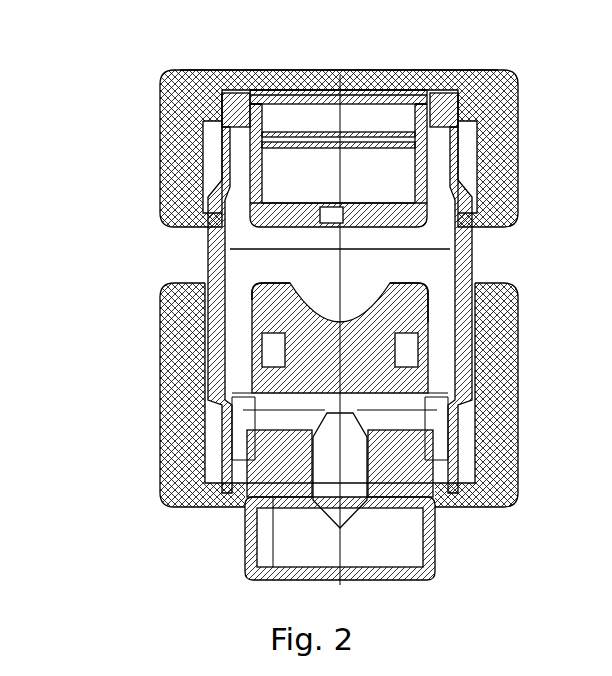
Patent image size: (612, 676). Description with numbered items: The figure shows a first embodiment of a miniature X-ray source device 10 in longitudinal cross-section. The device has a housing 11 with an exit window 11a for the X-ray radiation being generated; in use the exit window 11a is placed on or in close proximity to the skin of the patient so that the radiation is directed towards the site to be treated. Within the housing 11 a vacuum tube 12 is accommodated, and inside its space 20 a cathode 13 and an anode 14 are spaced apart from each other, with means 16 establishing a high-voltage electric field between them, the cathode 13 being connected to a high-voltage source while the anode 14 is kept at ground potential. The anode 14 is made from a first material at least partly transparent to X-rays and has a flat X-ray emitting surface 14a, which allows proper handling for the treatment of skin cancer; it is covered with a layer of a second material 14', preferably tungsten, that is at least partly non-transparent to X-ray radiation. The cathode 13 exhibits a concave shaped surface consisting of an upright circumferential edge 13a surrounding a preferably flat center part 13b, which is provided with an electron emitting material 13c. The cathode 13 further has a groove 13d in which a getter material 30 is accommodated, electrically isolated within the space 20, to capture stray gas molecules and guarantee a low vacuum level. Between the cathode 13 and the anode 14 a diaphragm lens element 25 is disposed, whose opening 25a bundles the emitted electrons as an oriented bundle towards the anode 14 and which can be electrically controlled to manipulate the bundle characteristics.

The miniature X-ray source device 10 is at (85, 317).
The housing 11 is at (172, 160).
The exit window 11a is at (178, 72).
The vacuum tube 12 is at (214, 262).
The cathode 13 is at (436, 492).
The upright circumferential edge 13a is at (414, 286).
The center part 13b is at (416, 324).
The electron emitting material 13c is at (254, 300).
The groove 13d is at (255, 384).
The anode 14 is at (336, 120).
The flat X-ray emitting surface 14a is at (312, 90).
The layer of second material 14' is at (338, 54).
The means for establishing a high-voltage electric field 16 is at (318, 522).
The space 20 is at (416, 252).
The diaphragm lens element 25 is at (250, 218).
The opening 25a is at (348, 205).
The getter material 30 is at (262, 350).